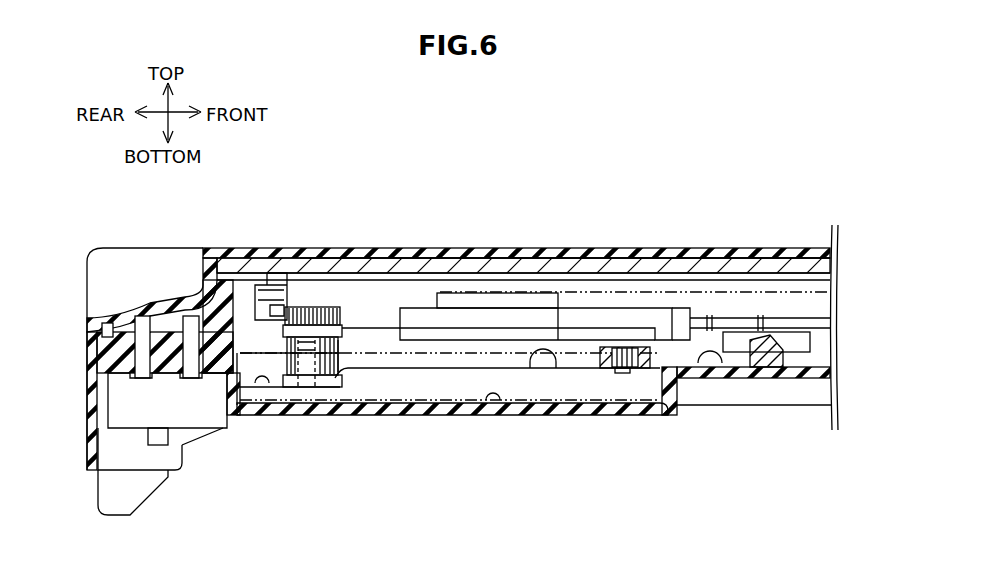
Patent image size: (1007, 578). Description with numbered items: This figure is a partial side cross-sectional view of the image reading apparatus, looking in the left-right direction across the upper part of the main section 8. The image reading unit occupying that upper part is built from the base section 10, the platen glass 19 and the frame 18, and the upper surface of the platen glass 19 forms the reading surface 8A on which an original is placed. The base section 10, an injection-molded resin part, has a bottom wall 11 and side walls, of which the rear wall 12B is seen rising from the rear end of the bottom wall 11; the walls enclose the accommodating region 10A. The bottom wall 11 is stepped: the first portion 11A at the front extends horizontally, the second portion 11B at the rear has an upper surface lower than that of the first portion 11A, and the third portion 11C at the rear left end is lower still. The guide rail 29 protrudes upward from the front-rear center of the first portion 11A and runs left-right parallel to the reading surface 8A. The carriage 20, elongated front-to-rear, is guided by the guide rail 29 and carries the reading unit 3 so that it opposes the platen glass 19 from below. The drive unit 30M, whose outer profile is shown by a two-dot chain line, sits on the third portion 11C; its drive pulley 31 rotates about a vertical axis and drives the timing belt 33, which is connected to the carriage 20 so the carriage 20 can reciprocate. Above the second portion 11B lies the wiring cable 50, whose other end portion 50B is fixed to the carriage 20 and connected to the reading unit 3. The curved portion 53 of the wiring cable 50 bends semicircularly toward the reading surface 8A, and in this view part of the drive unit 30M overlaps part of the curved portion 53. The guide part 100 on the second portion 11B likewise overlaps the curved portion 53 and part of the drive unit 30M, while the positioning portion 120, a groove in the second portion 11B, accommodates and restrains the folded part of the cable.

The main section 8 is at (93, 243).
The frame 18 is at (236, 242).
The rear wall 12B is at (240, 312).
The other end portion 50B is at (304, 310).
The wiring cable 50 is at (346, 306).
The drive unit 30M is at (456, 346).
The carriage 20 is at (527, 325).
The reading unit 3 is at (600, 283).
The reading surface 8A is at (660, 258).
The platen glass 19 is at (738, 268).
The accommodating region 10A is at (820, 350).
The base section 10 is at (217, 440).
The second portion 11B is at (256, 383).
The guide part 100 is at (307, 400).
The positioning portion 120 is at (327, 383).
The curved portion 53 is at (340, 346).
The third portion 11C is at (493, 405).
The first portion 11A is at (552, 375).
The drive pulley 31 is at (620, 372).
The timing belt 33 is at (689, 362).
The bottom wall 11 is at (720, 380).
The guide rail 29 is at (763, 375).